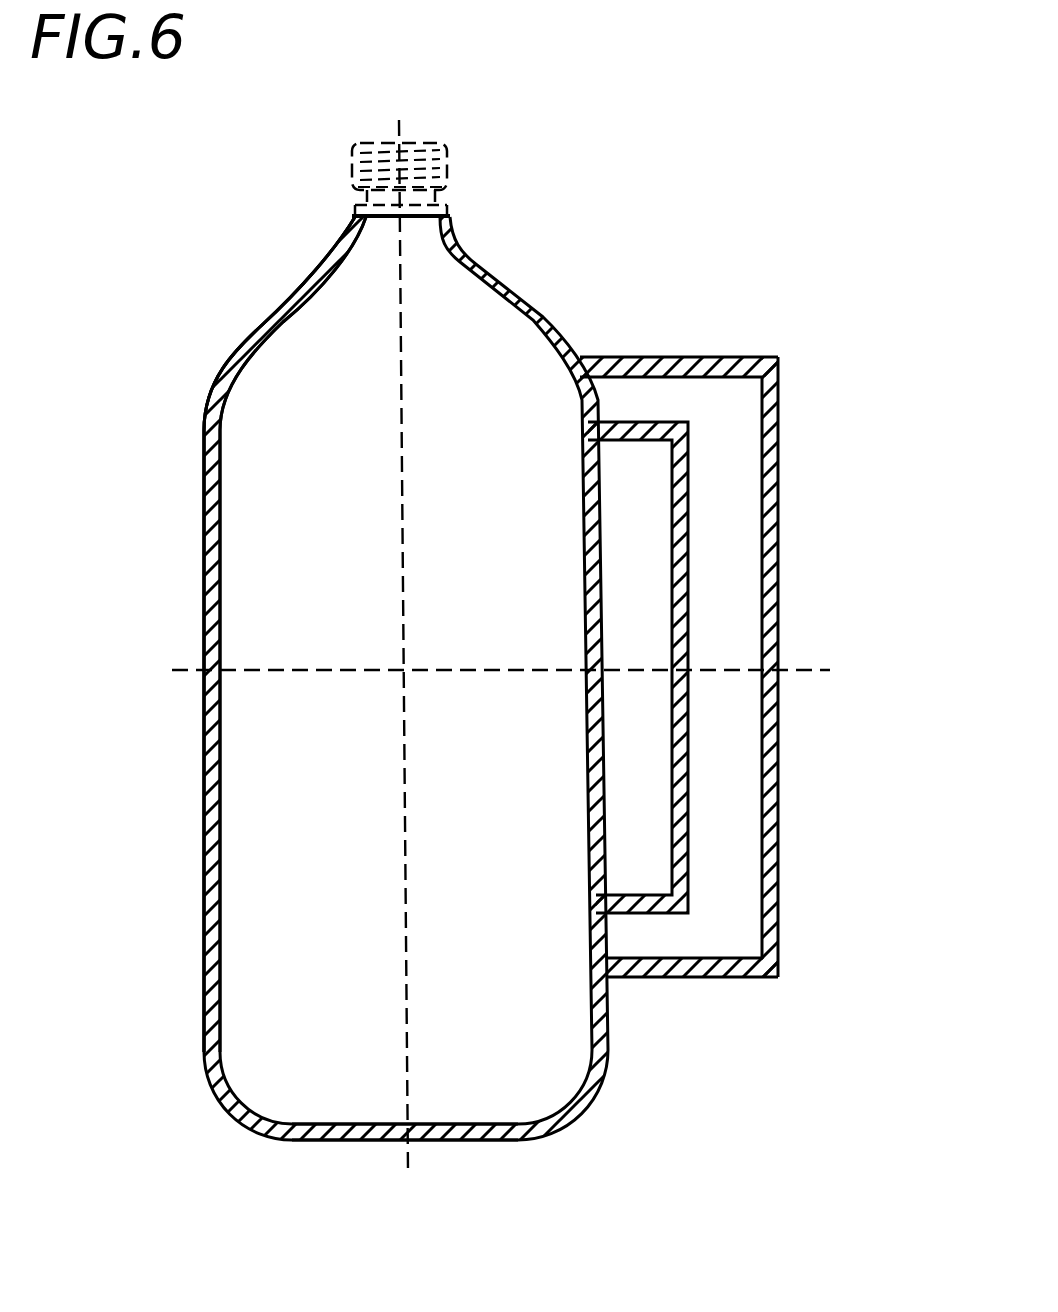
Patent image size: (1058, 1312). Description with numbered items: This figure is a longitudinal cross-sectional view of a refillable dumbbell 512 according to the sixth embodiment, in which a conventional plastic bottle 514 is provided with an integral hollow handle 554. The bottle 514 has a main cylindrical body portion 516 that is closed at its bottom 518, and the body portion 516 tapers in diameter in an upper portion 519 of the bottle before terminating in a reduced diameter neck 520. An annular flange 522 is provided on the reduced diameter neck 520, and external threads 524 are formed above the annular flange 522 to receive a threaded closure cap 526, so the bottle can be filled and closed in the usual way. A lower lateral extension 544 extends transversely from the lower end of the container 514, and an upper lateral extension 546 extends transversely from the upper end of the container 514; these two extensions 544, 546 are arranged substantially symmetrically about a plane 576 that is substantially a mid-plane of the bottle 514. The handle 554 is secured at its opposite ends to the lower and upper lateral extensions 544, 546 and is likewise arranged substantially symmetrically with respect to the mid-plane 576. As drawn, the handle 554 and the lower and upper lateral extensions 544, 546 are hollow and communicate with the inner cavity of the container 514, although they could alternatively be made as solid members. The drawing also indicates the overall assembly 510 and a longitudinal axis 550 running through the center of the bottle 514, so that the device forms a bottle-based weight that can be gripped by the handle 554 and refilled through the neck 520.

The container 510 is at (717, 212).
The refillable dumbbell 512 is at (120, 225).
The bottle 514 is at (205, 738).
The main cylindrical body portion 516 is at (208, 810).
The bottom 518 is at (335, 1123).
The upper portion 519 is at (215, 378).
The reduced diameter neck 520 is at (362, 196).
The annular flange 522 is at (357, 214).
The external threads 524 is at (353, 160).
The threaded closure cap 526 is at (378, 143).
The lower lateral extension 544 is at (683, 978).
The upper lateral extension 546 is at (673, 357).
The longitudinal axis 550 is at (406, 697).
The handle 554 is at (780, 582).
The mid-plane 576 is at (312, 668).